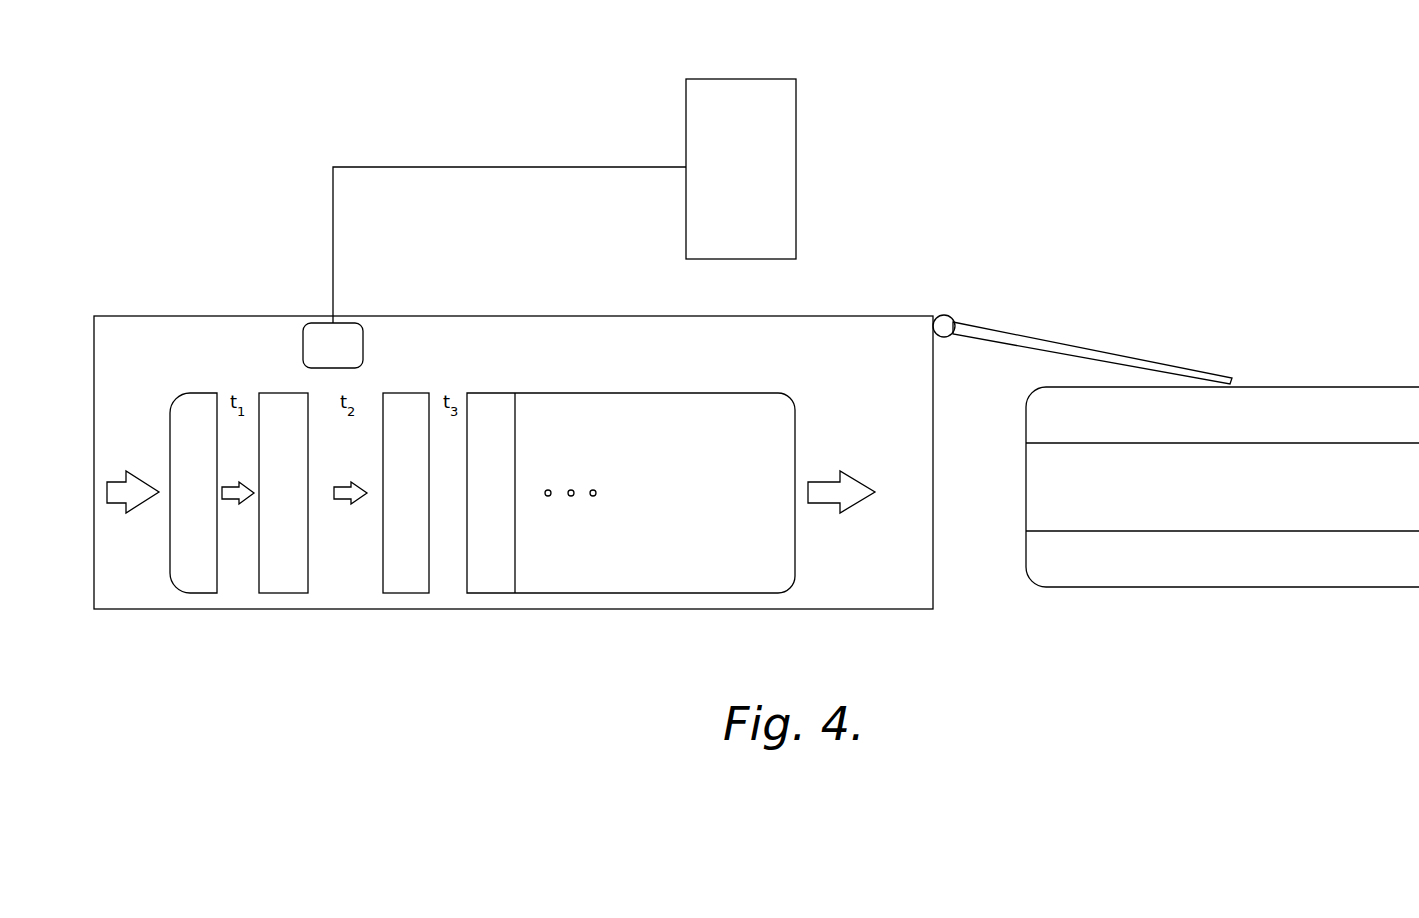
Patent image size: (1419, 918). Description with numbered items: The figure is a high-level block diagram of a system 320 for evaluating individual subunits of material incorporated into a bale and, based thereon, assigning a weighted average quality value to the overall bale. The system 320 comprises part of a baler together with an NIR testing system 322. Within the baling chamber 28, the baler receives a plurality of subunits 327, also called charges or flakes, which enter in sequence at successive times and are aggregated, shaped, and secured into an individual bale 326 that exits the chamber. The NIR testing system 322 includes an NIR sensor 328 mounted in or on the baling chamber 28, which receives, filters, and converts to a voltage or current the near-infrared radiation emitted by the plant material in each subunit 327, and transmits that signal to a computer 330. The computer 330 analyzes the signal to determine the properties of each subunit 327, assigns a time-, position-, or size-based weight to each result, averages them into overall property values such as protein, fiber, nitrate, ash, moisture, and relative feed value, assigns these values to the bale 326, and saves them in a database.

The system 320 is at (303, 119).
The baling chamber 28 is at (882, 618).
The NIR testing system 322 is at (288, 345).
The NIR sensor 328 is at (353, 338).
The computer 330 is at (783, 93).
The subunits 327 is at (275, 597).
The bale 326 is at (795, 388).